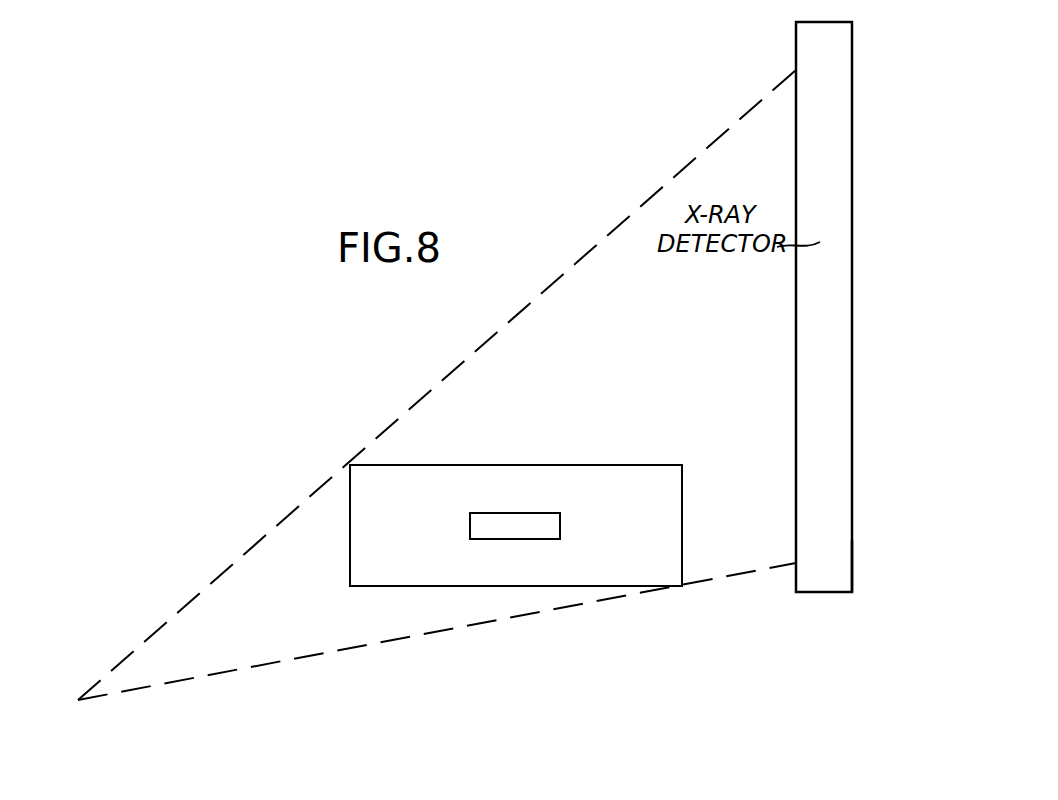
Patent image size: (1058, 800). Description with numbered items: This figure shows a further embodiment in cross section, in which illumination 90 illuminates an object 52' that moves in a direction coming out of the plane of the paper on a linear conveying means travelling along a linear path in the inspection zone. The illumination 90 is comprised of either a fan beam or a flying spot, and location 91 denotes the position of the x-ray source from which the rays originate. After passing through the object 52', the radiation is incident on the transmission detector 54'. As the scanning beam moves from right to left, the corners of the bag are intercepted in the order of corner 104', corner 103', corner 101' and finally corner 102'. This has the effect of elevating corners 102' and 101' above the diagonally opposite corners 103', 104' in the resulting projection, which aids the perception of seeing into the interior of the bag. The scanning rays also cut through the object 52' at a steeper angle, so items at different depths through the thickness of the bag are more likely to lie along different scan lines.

The illumination 90 is at (785, 453).
The location of the x-ray source 91 is at (78, 700).
The object 52' is at (546, 486).
The transmission detector 54' is at (875, 557).
The corner 101' is at (330, 593).
The corner 102' is at (318, 455).
The corner 103' is at (717, 474).
The corner 104' is at (713, 600).